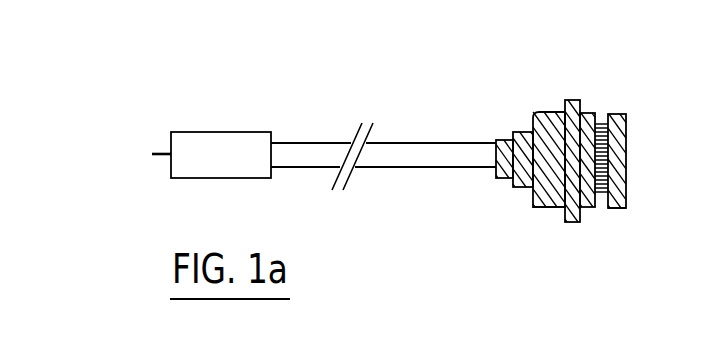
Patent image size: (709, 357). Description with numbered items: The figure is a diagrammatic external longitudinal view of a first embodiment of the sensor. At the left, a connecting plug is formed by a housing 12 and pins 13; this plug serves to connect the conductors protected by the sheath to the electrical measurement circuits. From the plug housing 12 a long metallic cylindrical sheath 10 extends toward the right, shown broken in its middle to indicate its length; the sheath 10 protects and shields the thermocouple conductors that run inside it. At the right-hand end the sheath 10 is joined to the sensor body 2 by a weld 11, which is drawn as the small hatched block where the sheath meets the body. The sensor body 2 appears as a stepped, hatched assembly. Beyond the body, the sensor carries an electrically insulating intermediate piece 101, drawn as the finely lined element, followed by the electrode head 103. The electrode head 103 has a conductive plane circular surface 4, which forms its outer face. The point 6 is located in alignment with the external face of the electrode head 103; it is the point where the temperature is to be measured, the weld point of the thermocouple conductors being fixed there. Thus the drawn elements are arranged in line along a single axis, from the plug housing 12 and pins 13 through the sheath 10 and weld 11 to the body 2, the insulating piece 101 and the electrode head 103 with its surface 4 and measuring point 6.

The pins 13 is at (161, 149).
The housing 12 is at (244, 144).
The metallic cylindrical sheath 10 is at (398, 141).
The weld 11 is at (491, 144).
The sensor body 2 is at (544, 107).
The electrically insulating intermediate piece 101 is at (603, 107).
The point where the temperature is to be measured 6 is at (629, 161).
The conductive plane circular surface 4 is at (641, 168).
The electrode head 103 is at (618, 214).